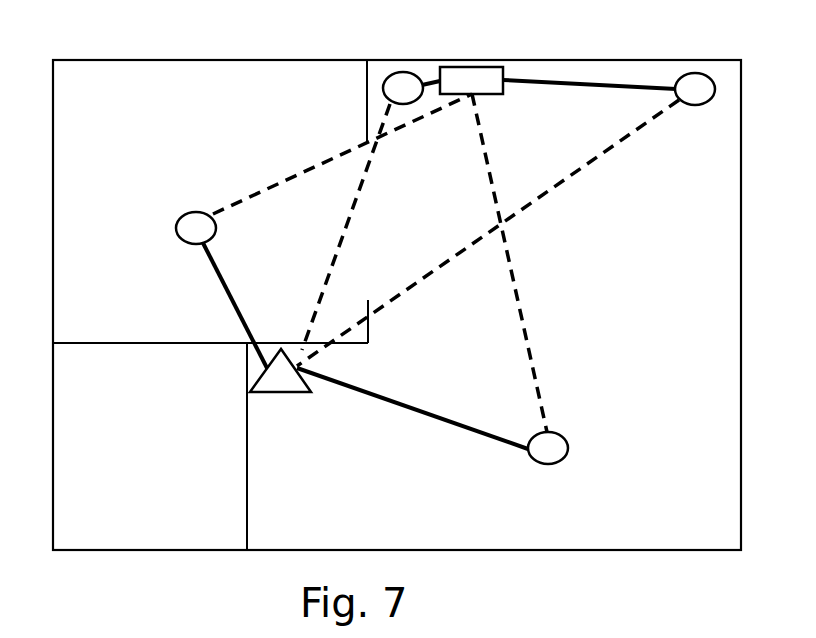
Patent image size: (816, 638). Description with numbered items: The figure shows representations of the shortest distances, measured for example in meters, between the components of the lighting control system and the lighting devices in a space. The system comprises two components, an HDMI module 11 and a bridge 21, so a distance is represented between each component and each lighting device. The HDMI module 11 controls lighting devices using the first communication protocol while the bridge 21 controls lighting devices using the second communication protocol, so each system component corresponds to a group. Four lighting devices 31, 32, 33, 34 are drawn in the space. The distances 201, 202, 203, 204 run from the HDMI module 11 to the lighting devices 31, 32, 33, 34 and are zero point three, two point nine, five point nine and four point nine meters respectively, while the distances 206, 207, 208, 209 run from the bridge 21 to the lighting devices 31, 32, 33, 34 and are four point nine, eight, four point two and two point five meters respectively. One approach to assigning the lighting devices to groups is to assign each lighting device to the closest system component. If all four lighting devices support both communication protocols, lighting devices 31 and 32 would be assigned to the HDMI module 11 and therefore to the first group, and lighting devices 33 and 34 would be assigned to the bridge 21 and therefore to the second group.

The HDMI module 11 is at (471, 80).
The bridge 21 is at (280, 371).
The lighting device 31 is at (403, 88).
The lighting device 32 is at (695, 89).
The lighting device 33 is at (548, 448).
The lighting device 34 is at (196, 228).
The distance 201 is at (434, 81).
The distance 202 is at (586, 82).
The distance 203 is at (521, 320).
The distance 204 is at (314, 165).
The distance 206 is at (347, 233).
The distance 207 is at (603, 153).
The distance 208 is at (431, 421).
The distance 209 is at (215, 283).